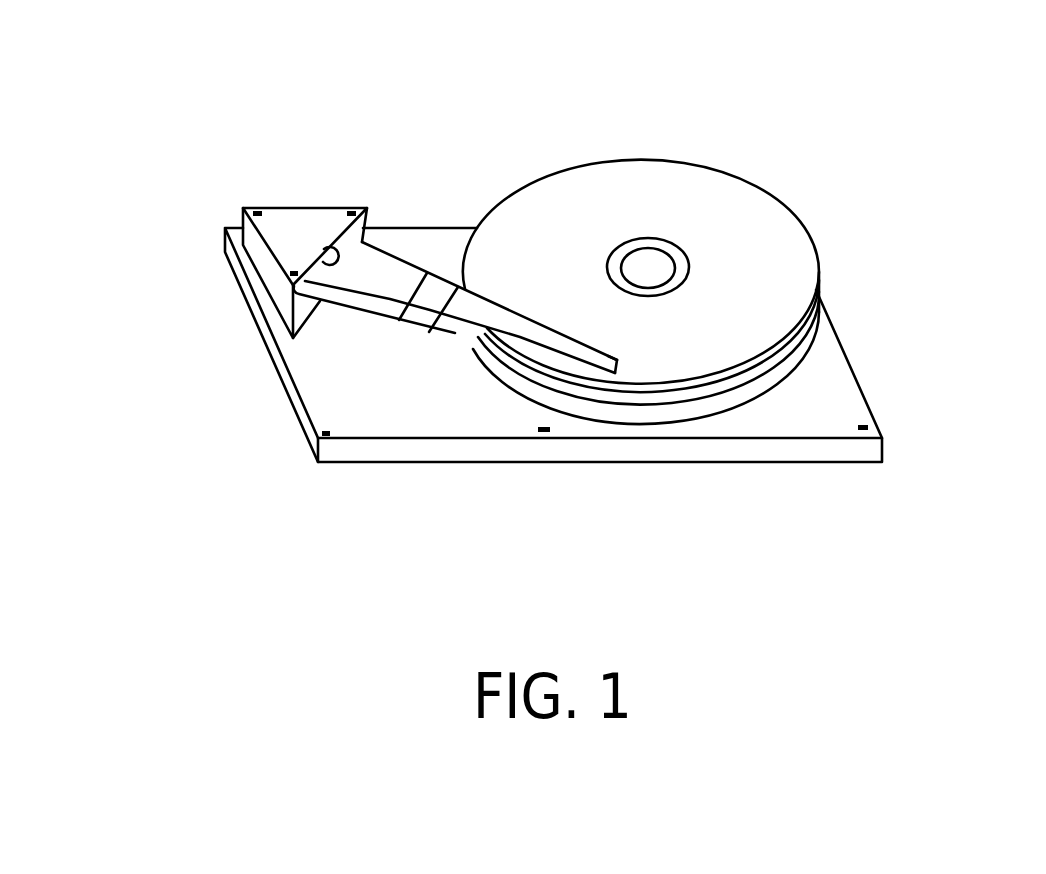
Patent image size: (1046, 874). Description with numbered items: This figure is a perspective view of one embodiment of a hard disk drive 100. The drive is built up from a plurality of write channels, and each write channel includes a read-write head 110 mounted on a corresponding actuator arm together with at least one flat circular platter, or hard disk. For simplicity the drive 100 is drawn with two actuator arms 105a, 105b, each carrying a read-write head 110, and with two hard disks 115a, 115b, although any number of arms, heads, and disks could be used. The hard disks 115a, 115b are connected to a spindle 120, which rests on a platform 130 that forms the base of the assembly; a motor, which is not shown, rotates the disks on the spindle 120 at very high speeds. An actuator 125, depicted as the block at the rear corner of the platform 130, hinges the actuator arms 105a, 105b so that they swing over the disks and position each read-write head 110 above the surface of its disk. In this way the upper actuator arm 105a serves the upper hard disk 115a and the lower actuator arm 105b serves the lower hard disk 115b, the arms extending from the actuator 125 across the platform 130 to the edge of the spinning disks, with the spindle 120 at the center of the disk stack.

The hard disk drive 100 is at (121, 74).
The actuator arm 105a is at (455, 294).
The actuator arm 105b is at (463, 340).
The read-write head 110 is at (614, 365).
The hard disk 115a is at (822, 272).
The hard disk 115b is at (822, 314).
The spindle 120 is at (672, 252).
The actuator 125 is at (284, 207).
The platform 130 is at (298, 418).